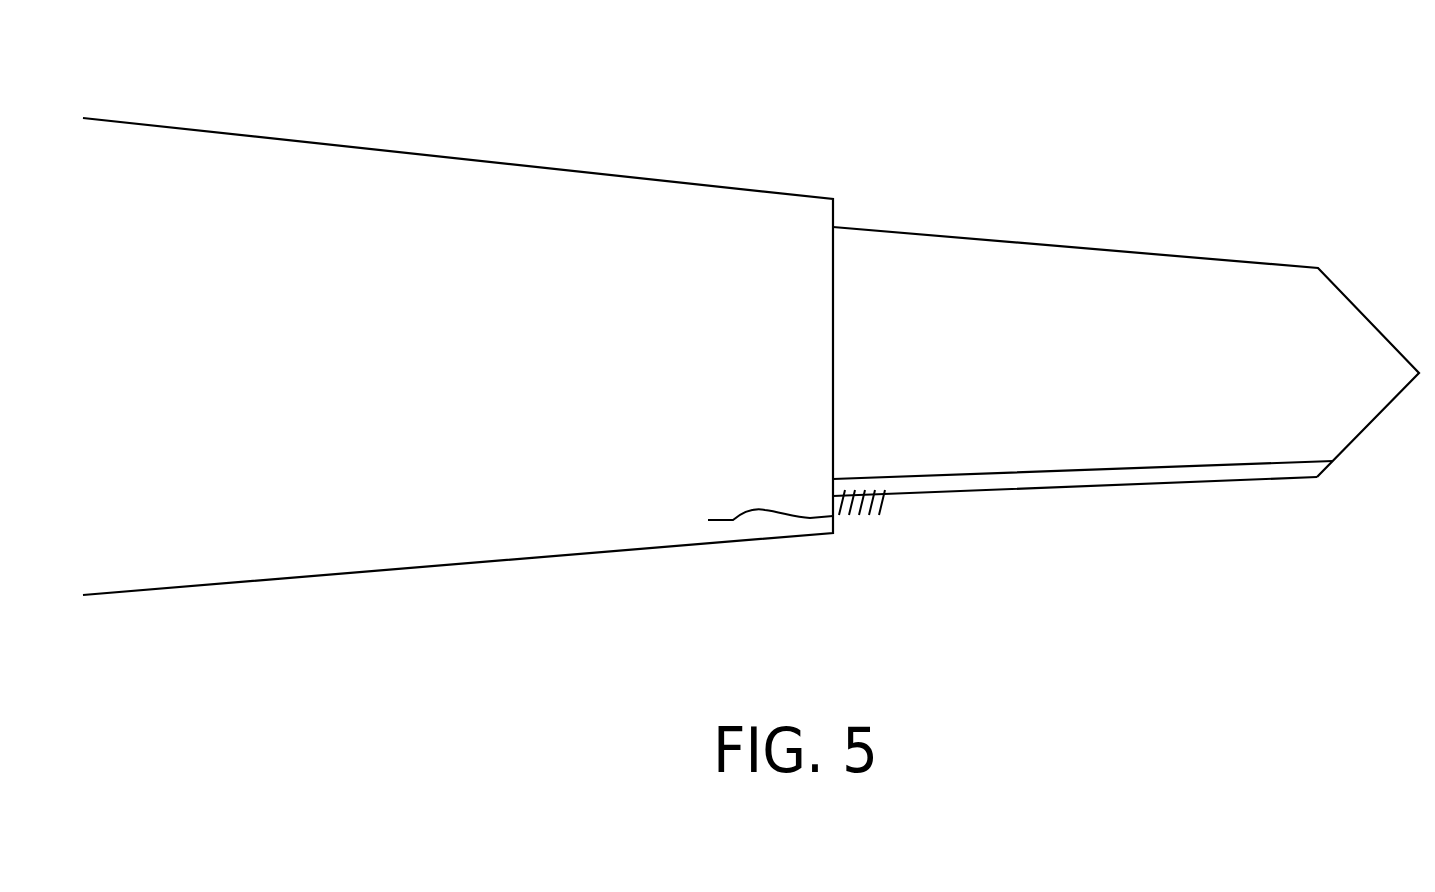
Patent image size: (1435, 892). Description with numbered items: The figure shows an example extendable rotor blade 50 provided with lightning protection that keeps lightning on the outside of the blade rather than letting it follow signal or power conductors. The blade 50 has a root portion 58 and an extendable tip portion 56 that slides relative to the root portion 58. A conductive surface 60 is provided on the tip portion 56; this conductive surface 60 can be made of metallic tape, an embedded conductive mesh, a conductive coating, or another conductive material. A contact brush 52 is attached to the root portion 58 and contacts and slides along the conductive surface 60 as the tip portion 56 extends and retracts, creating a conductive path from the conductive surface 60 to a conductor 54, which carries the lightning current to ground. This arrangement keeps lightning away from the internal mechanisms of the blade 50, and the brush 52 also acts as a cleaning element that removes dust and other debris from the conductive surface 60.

The blade 50 is at (989, 185).
The contact brush 52 is at (883, 513).
The conductor 54 is at (747, 510).
The tip portion 56 is at (1053, 375).
The root portion 58 is at (468, 326).
The conductive surface 60 is at (1088, 476).